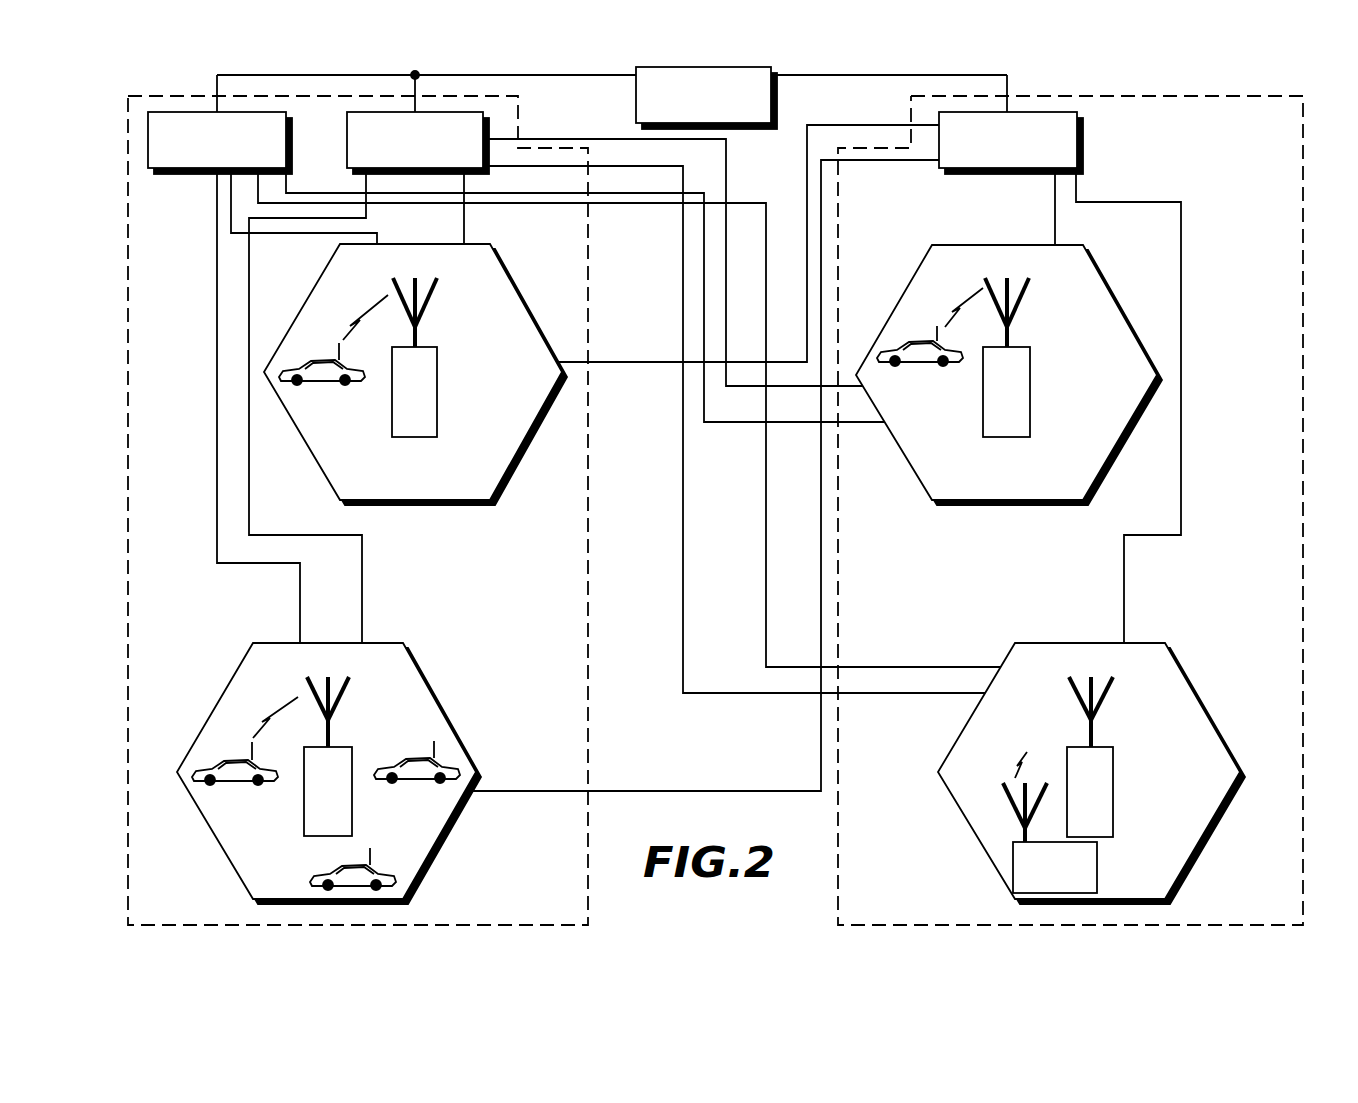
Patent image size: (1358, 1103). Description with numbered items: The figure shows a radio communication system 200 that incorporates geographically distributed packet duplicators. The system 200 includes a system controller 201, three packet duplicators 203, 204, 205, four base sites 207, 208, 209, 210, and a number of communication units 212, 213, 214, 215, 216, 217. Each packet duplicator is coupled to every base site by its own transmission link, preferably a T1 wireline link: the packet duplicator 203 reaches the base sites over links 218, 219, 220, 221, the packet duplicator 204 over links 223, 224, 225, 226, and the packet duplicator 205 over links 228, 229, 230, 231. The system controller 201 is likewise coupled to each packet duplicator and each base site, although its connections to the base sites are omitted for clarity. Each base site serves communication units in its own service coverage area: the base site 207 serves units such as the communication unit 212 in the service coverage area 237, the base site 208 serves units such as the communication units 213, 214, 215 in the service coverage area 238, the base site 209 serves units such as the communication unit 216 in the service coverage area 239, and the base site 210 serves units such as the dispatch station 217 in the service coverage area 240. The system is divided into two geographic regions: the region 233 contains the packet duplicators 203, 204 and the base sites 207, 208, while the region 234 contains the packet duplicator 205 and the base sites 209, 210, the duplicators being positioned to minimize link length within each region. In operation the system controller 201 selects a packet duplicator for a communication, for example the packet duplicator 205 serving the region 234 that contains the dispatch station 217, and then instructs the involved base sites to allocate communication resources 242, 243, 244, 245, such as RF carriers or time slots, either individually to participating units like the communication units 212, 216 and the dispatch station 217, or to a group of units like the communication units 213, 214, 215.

The radio communication system 200 is at (722, 835).
The system controller 201 is at (777, 104).
The packet duplicator 203 is at (176, 175).
The packet duplicator 204 is at (346, 140).
The packet duplicator 205 is at (1084, 143).
The base site 207 is at (438, 420).
The base site 208 is at (353, 820).
The base site 209 is at (1031, 421).
The base site 210 is at (1114, 821).
The communication unit 212 is at (318, 386).
The communication unit 213 is at (232, 784).
The communication unit 214 is at (415, 755).
The communication unit 215 is at (392, 869).
The communication unit 216 is at (910, 338).
The dispatch station 217 is at (1098, 872).
The transmission link 218 is at (215, 318).
The transmission link 219 is at (285, 235).
The transmission link 220 is at (764, 517).
The transmission link 221 is at (705, 426).
The transmission link 223 is at (362, 592).
The transmission link 224 is at (467, 224).
The transmission link 225 is at (682, 590).
The transmission link 226 is at (578, 137).
The transmission link 228 is at (868, 124).
The transmission link 229 is at (676, 789).
The transmission link 230 is at (1057, 226).
The transmission link 231 is at (1182, 367).
The geographic region 233 is at (127, 500).
The geographic region 234 is at (1304, 355).
The service coverage area 237 is at (517, 293).
The service coverage area 238 is at (440, 698).
The service coverage area 239 is at (988, 244).
The service coverage area 240 is at (1205, 698).
The communication resource 242 is at (344, 340).
The communication resource 243 is at (262, 727).
The communication resource 244 is at (983, 291).
The communication resource 245 is at (1012, 777).